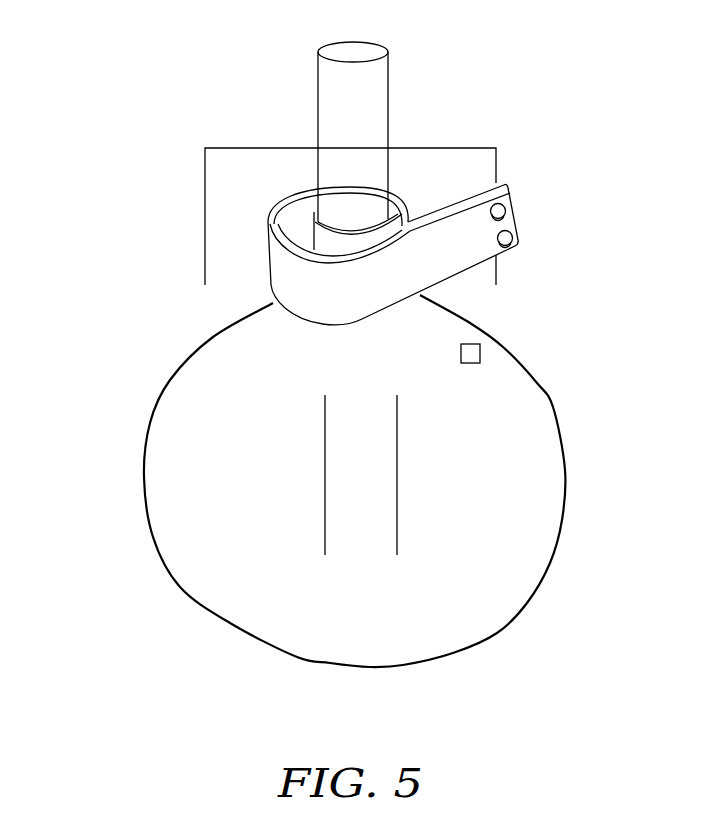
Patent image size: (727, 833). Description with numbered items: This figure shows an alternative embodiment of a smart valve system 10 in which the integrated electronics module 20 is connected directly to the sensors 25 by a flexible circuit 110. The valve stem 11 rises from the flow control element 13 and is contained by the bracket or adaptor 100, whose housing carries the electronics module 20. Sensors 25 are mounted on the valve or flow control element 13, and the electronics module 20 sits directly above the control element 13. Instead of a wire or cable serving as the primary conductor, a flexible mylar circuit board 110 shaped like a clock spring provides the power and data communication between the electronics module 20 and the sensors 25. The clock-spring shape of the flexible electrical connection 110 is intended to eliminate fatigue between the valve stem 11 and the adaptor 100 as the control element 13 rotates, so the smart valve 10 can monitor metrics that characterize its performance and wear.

The smart valve system 10 is at (144, 60).
The valve stem 11 is at (388, 52).
The flow control element 13 is at (552, 405).
The electronics module 20 is at (308, 207).
The sensors 25 is at (481, 352).
The adaptor 100 is at (496, 163).
The flexible circuit 110 is at (518, 212).